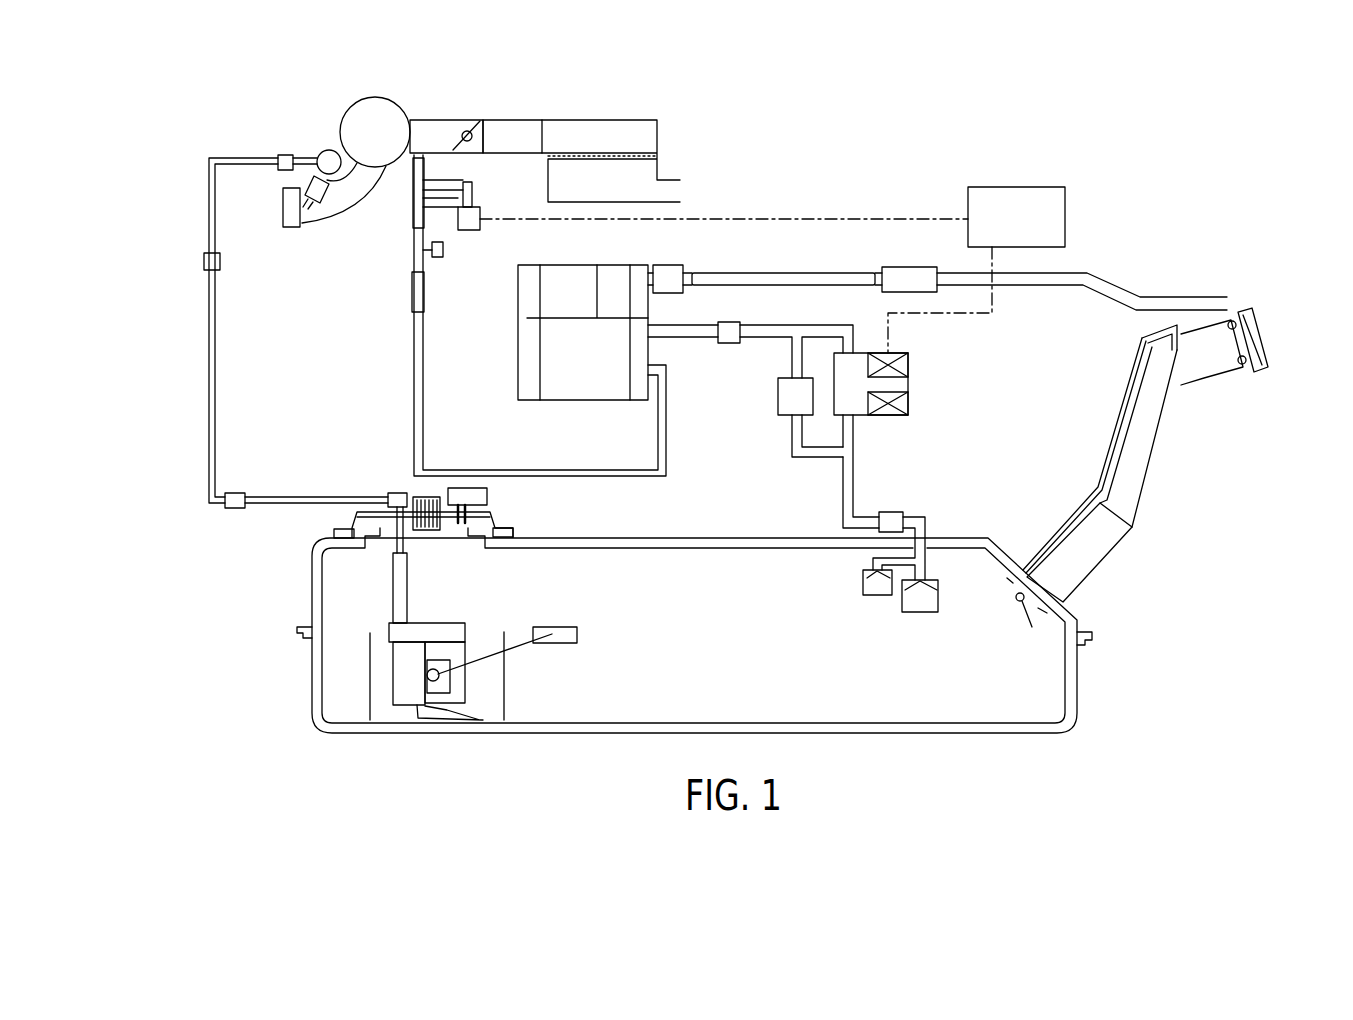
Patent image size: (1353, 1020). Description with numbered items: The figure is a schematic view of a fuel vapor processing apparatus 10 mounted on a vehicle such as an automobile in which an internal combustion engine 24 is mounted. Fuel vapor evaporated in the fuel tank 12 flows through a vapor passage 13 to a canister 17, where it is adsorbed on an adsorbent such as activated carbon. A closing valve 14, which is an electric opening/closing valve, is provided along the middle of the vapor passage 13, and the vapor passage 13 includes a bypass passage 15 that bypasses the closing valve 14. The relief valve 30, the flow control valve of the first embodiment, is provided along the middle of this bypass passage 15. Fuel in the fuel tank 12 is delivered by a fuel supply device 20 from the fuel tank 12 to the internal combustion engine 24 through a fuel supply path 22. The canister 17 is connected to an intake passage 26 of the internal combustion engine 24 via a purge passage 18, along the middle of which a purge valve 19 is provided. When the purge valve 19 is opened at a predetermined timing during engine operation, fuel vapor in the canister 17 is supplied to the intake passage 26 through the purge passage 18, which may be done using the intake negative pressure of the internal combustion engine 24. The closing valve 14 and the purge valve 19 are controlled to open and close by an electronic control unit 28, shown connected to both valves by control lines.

The fuel vapor processing apparatus 10 is at (749, 171).
The fuel tank 12 is at (1080, 677).
The vapor passage 13 is at (858, 480).
The closing valve 14 is at (911, 383).
The bypass passage 15 is at (788, 433).
The canister 17 is at (513, 356).
The purge passage 18 is at (413, 373).
The purge valve 19 is at (472, 225).
The fuel supply device 20 is at (382, 620).
The fuel supply path 22 is at (208, 406).
The internal combustion engine 24 is at (293, 228).
The intake passage 26 is at (440, 128).
The electronic control unit 28 is at (1052, 186).
The relief valve 30 is at (775, 395).